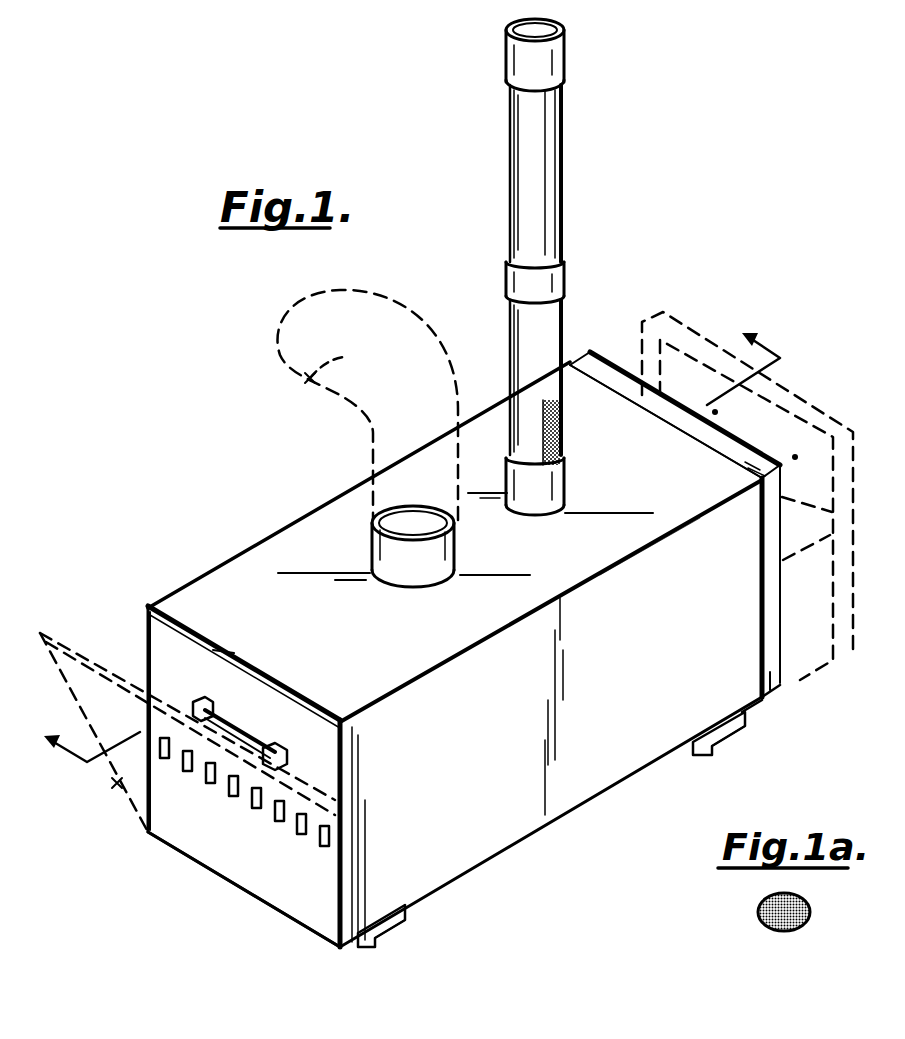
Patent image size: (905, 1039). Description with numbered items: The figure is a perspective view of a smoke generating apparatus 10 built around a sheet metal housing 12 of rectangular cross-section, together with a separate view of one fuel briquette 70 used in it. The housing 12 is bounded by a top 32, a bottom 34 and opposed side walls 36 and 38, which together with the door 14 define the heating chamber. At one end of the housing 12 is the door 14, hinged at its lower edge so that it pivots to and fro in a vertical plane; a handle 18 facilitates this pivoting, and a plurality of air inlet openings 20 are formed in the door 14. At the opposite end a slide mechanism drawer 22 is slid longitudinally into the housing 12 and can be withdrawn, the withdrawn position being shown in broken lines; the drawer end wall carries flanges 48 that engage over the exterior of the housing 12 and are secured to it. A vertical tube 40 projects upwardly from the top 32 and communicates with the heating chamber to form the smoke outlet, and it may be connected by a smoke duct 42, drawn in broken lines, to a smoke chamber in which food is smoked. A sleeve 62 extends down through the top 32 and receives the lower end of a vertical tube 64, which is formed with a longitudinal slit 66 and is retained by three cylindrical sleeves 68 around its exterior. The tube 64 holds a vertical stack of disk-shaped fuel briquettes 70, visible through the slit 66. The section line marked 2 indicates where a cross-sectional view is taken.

In FIG. 1, the section line for Fig. 2 is at (400, 531).
In FIG. 1, the smoke generating apparatus 10 is at (260, 472).
In FIG. 1, the sheet metal housing 12 is at (555, 790).
In FIG. 1, the door 14 is at (117, 783).
In FIG. 1, the handle 18 is at (220, 720).
In FIG. 1, the air inlet openings 20 is at (230, 784).
In FIG. 1, the slide mechanism drawer 22 is at (617, 350).
In FIG. 1, the top 32 is at (279, 562).
In FIG. 1, the bottom 34 is at (482, 858).
In FIG. 1, the side wall 36 is at (203, 585).
In FIG. 1, the side wall 38 is at (614, 755).
In FIG. 1, the vertical tube 40 is at (372, 567).
In FIG. 1, the smoke duct 42 is at (300, 383).
In FIG. 1, the flanges 48 is at (770, 668).
In FIG. 1, the sleeve 62 is at (566, 513).
In FIG. 1, the vertical tube 64 is at (510, 212).
In FIG. 1, the longitudinal slit 66 is at (550, 216).
In FIG. 1, the cylindrical sleeves 68 is at (507, 70).
In FIG. 1, the fuel briquettes 70 is at (562, 440).
In FIG. 1A, the fuel briquettes 70 is at (758, 897).